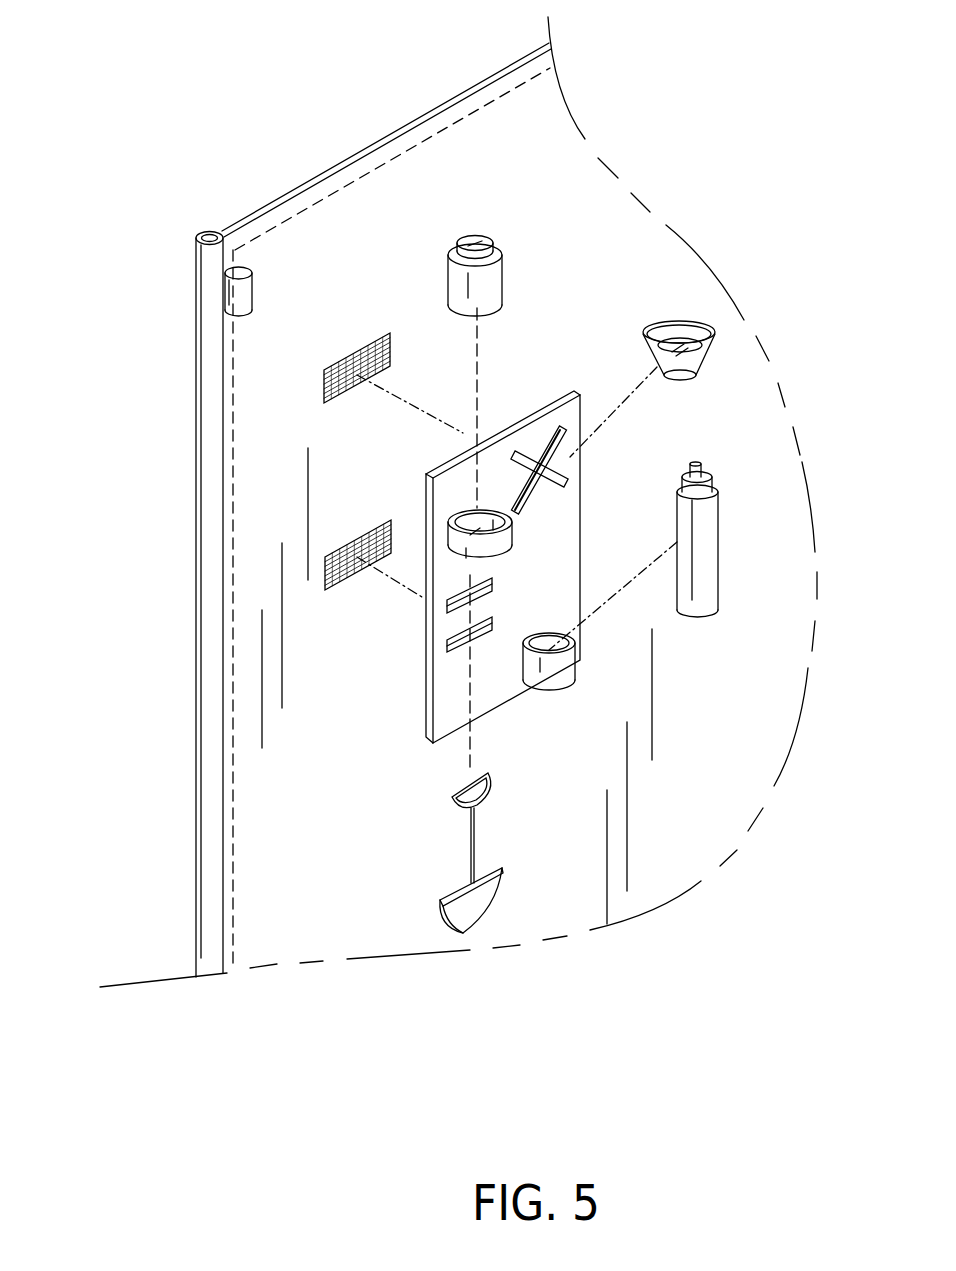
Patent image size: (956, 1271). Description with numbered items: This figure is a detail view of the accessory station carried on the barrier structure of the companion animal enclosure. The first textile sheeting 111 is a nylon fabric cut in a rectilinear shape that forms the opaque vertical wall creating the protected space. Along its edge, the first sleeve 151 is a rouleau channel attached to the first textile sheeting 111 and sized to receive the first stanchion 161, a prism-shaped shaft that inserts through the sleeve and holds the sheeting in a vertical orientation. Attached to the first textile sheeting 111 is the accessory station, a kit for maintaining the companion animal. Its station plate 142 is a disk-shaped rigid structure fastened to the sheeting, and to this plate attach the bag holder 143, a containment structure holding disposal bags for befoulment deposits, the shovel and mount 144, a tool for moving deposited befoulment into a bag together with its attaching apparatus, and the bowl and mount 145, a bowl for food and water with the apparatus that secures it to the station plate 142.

The first textile sheeting 111 is at (358, 230).
The first stanchion 161 is at (212, 235).
The first sleeve 151 is at (197, 412).
The bag holder 143 is at (485, 510).
The bowl and mount 145 is at (560, 430).
The station plate 142 is at (580, 530).
The shovel and mount 144 is at (452, 628).